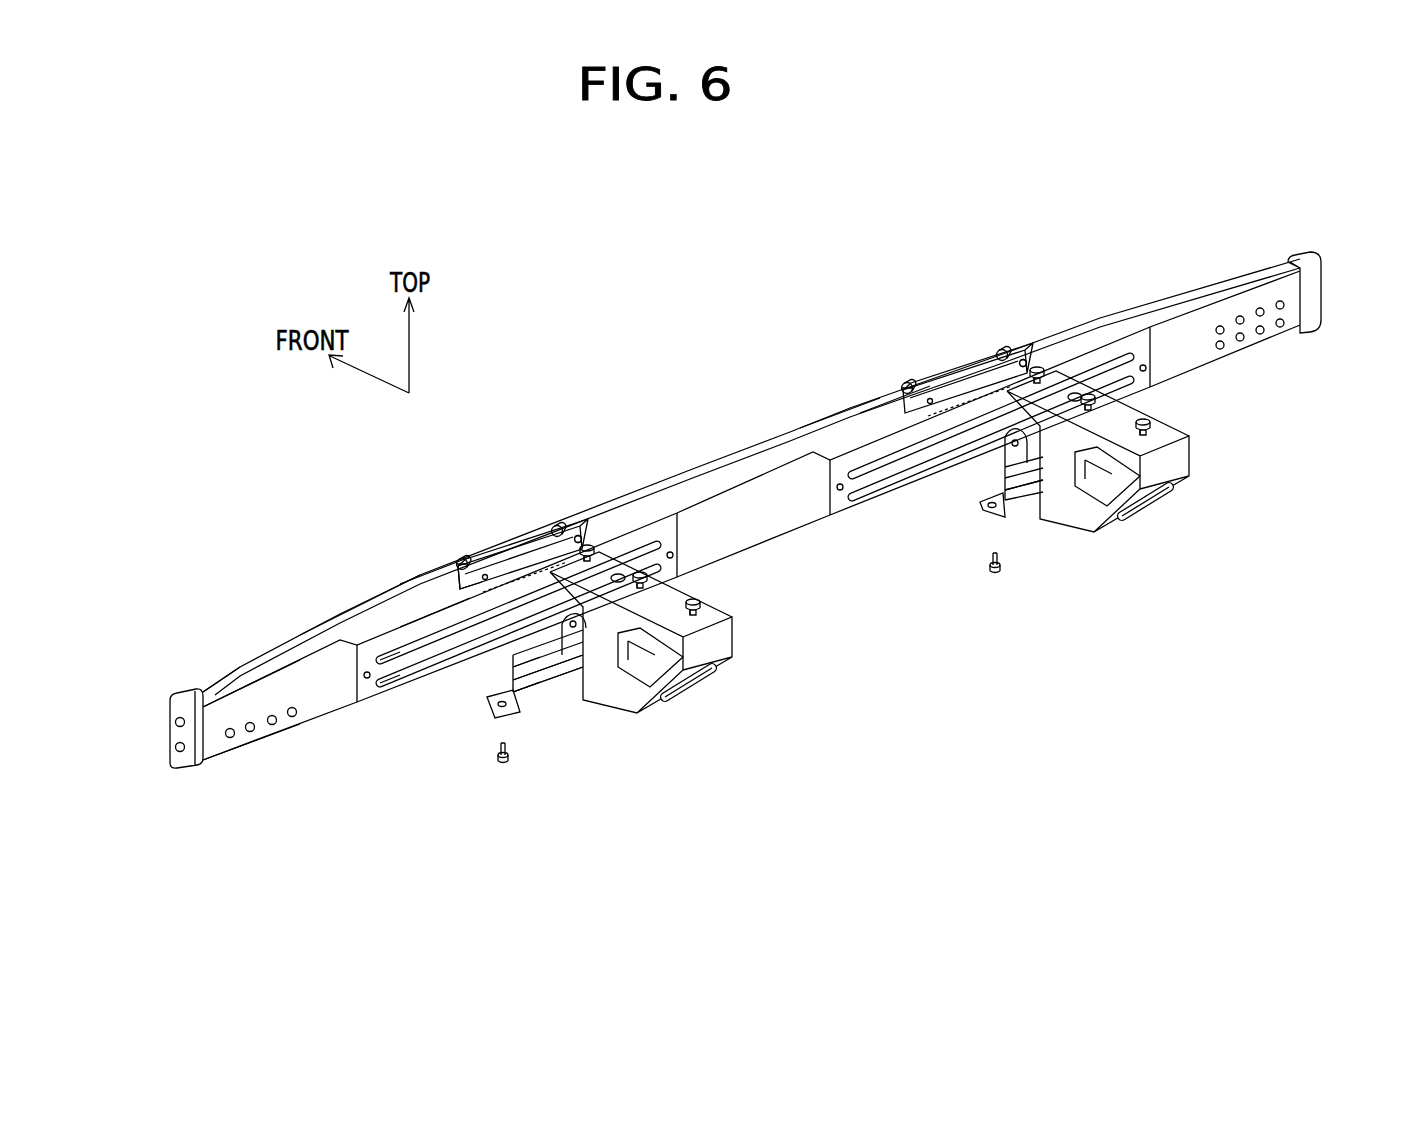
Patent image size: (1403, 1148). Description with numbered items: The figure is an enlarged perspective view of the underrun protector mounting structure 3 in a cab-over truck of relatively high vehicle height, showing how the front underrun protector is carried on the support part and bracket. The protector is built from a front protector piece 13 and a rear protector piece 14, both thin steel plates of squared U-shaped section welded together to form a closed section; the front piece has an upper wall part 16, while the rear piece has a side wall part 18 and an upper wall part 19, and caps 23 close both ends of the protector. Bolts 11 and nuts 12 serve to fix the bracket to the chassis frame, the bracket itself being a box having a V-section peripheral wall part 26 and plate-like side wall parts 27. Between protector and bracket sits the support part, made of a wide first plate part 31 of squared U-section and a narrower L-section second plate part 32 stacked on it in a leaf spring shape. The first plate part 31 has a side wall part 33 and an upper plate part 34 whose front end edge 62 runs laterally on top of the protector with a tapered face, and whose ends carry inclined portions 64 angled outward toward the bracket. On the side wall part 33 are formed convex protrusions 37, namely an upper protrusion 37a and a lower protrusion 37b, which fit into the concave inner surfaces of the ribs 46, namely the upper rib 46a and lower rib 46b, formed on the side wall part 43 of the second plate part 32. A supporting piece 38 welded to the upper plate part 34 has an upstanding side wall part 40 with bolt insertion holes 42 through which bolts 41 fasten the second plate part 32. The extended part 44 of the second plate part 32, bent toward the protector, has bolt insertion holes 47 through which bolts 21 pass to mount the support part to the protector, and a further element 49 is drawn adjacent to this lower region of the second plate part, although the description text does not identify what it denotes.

The underrun protector mounting structure 3 is at (1255, 249).
The bolts 11 is at (588, 545).
The nuts 12 is at (600, 553).
The protector piece 13 is at (240, 688).
The protector piece 14 is at (240, 740).
The upper wall part 16 is at (205, 697).
The side wall part 18 is at (287, 730).
The upper wall part 19 is at (296, 662).
The bolts 21 is at (503, 767).
The caps 23 is at (183, 768).
The peripheral wall part 26 is at (740, 640).
The side wall parts 27 is at (688, 702).
The first plate part 31 is at (345, 631).
The second plate part 32 is at (515, 658).
The side wall part 33 is at (376, 647).
The upper plate part 34 is at (420, 625).
The protrusions 37 is at (755, 583).
The upper protrusion 37a is at (385, 666).
The lower protrusion 37b is at (385, 690).
The supporting piece 38 is at (512, 562).
The side wall part 40 is at (552, 528).
The bolts 41 is at (458, 558).
The bolt insertion holes 42 is at (468, 562).
The side wall part 43 is at (558, 685).
The extended part 44 is at (498, 712).
The ribs 46 is at (810, 673).
The upper rib 46a is at (548, 702).
The lower rib 46b is at (522, 710).
The bolt insertion holes 47 is at (487, 700).
The side plate 49 is at (580, 648).
The front end edge 62 is at (450, 600).
The inclined portions 64 is at (400, 605).